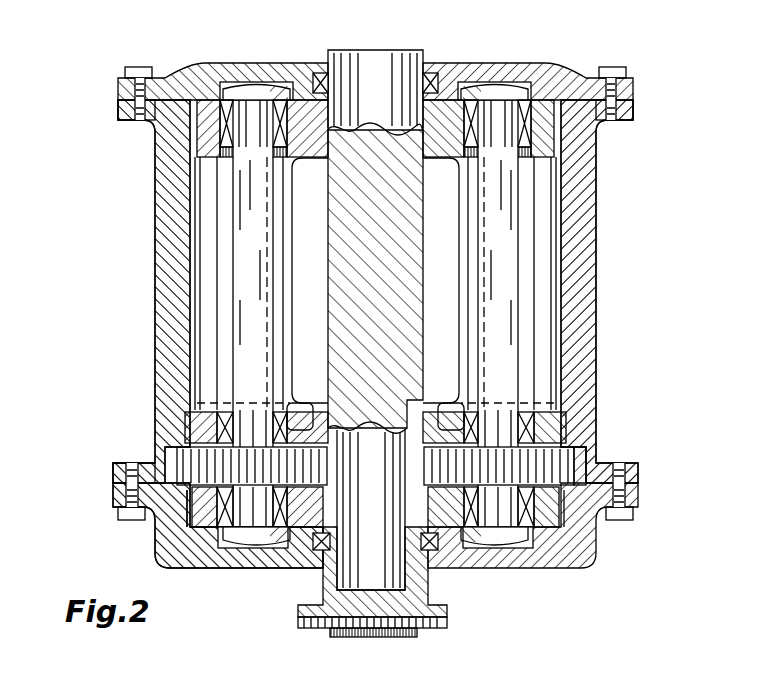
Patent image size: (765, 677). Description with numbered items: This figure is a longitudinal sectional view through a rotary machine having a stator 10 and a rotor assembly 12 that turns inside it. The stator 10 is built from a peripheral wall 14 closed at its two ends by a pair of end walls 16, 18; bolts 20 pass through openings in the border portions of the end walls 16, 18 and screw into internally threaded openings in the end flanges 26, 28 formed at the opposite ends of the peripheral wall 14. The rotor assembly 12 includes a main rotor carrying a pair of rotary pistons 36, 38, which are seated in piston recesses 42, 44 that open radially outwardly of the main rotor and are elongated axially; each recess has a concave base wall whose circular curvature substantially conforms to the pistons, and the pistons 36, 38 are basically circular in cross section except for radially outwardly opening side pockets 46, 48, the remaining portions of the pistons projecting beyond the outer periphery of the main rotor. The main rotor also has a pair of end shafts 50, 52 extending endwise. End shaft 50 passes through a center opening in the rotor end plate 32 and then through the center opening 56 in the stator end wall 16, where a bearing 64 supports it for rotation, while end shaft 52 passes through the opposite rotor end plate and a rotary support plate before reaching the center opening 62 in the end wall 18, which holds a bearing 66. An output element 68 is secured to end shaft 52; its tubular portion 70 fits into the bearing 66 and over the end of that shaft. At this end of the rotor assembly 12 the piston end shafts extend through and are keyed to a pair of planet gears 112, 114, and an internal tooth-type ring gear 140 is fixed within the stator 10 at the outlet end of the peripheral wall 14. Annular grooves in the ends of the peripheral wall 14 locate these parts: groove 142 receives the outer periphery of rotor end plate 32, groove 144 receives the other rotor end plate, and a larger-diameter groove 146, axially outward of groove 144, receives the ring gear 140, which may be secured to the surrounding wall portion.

The stator 10 is at (140, 270).
The rotor assembly 12 is at (522, 327).
The peripheral wall 14 is at (172, 352).
The end wall 16 is at (208, 62).
The end wall 18 is at (547, 562).
The bolts 20 is at (137, 66).
The end flange 26 is at (118, 112).
The end flange 28 is at (113, 473).
The rotor end plate 32 is at (556, 100).
The rotary piston 36 is at (538, 233).
The rotary piston 38 is at (213, 187).
The piston recess 42 is at (428, 293).
The piston recess 44 is at (328, 218).
The side pocket 46 is at (447, 215).
The side pocket 48 is at (300, 294).
The end shaft 50 is at (372, 52).
The end shaft 52 is at (365, 572).
The center opening 56 is at (322, 72).
The center opening 62 is at (320, 546).
The bearing 64 is at (440, 80).
The bearing 66 is at (447, 568).
The output element 68 is at (443, 622).
The tubular portion 70 is at (423, 587).
The planet gear 112 is at (548, 463).
The planet gear 114 is at (157, 528).
The ring gear 140 is at (550, 428).
The groove 142 is at (195, 130).
The groove 144 is at (218, 402).
The groove 146 is at (203, 442).